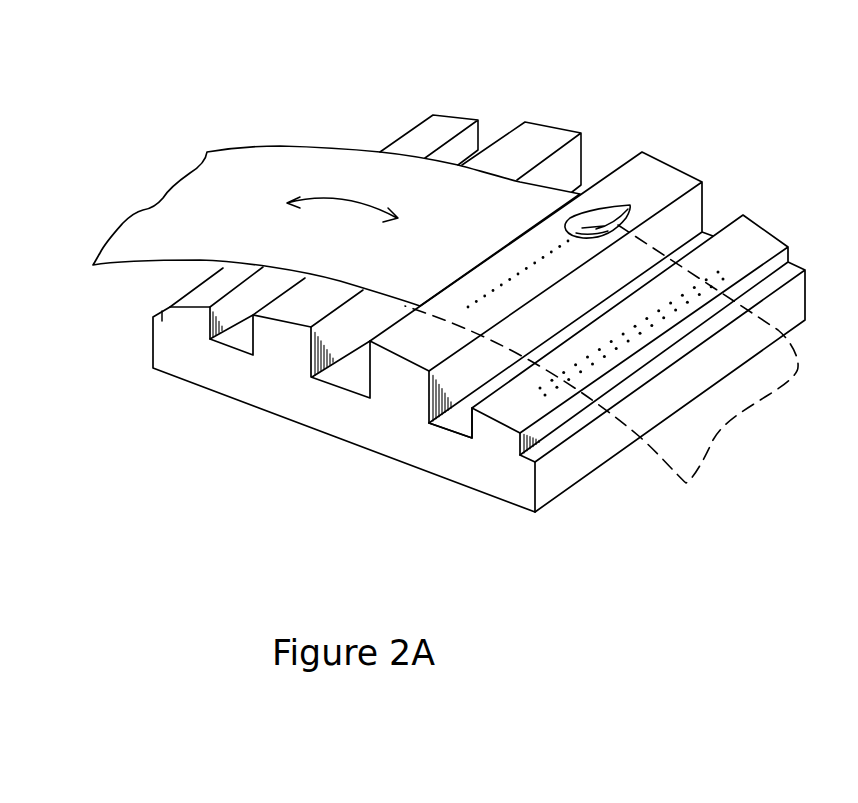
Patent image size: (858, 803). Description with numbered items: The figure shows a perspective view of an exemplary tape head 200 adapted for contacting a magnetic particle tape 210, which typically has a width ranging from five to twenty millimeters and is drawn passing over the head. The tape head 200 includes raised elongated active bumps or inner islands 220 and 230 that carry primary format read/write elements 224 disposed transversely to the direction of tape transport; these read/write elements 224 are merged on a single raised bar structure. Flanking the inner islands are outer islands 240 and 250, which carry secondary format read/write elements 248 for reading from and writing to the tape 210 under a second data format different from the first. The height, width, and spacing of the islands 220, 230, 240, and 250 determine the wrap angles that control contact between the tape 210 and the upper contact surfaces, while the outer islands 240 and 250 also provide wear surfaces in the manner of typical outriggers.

The tape head 200 is at (165, 370).
The tape 210 is at (232, 151).
The active island 220 is at (369, 380).
The active island 230 is at (248, 343).
The outer island 240 is at (472, 425).
The read/write elements 224 is at (630, 206).
The secondary format read/write elements 248 is at (582, 375).
The outer island 250 is at (170, 307).